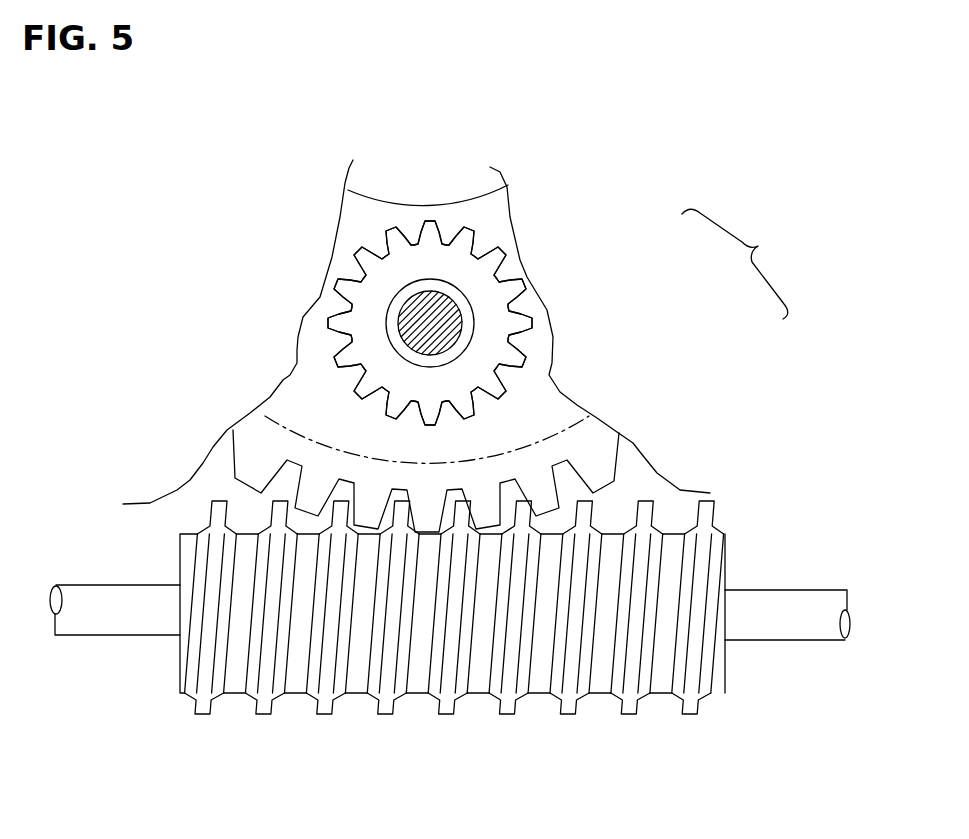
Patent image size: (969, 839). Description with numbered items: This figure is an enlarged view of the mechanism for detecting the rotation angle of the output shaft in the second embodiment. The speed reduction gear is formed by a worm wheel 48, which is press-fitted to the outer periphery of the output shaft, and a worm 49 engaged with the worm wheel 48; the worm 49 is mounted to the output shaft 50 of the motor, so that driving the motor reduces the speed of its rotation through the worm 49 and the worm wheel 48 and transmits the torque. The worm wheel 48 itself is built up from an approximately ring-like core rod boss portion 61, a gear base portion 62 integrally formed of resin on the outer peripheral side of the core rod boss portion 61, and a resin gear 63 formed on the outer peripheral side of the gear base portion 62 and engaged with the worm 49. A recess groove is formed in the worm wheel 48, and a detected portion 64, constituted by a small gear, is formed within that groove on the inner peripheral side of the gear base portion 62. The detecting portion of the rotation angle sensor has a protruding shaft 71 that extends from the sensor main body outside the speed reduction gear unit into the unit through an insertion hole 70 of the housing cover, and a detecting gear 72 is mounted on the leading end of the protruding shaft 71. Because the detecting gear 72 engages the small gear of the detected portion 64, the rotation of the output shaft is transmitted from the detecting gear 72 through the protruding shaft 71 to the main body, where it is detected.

The worm wheel 48 is at (738, 264).
The worm 49 is at (452, 690).
The output shaft 50 is at (802, 630).
The core rod boss portion 61 is at (512, 273).
The gear base portion 62 is at (545, 418).
The resin gear 63 is at (595, 450).
The detected portion 64 is at (298, 365).
The insertion hole 70 is at (390, 347).
The protruding shaft 71 is at (423, 307).
The detecting gear 72 is at (478, 282).